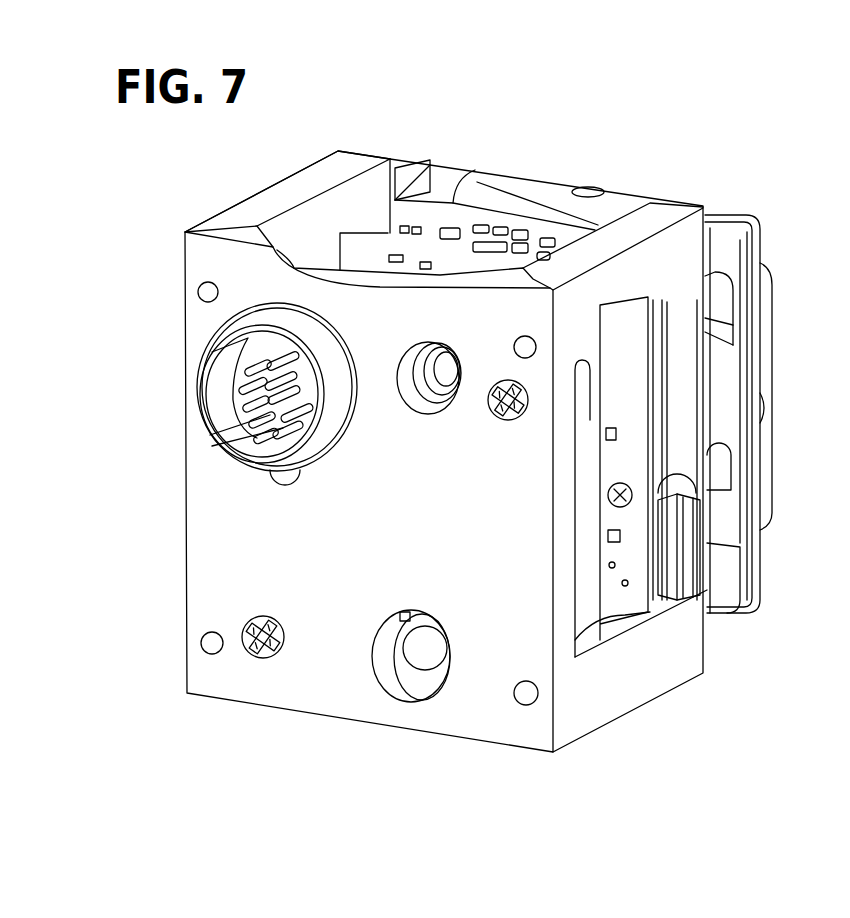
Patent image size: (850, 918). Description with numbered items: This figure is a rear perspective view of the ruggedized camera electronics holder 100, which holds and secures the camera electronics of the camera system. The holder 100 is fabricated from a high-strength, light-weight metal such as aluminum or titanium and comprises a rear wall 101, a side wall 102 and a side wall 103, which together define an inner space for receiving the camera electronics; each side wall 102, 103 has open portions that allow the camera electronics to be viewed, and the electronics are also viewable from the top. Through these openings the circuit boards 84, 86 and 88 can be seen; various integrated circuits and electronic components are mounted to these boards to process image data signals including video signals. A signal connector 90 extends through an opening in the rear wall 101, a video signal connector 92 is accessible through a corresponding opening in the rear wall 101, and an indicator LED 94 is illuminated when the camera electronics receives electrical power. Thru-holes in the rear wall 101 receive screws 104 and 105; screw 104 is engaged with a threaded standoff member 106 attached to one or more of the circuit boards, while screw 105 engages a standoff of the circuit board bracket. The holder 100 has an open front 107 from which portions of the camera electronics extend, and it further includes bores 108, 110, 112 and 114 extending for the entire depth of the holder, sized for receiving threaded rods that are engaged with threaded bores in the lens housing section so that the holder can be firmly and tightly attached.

The circuit board 84 is at (685, 410).
The circuit board 86 is at (653, 580).
The circuit board 88 is at (606, 622).
The signal connector 90 is at (205, 386).
The video signal connector 92 is at (440, 403).
The indicator LED 94 is at (418, 660).
The ruggedized camera electronics holder 100 is at (188, 535).
The rear wall 101 is at (322, 655).
The side wall 102 is at (285, 195).
The side wall 103 is at (680, 262).
The screw 104 is at (512, 418).
The screw 105 is at (258, 620).
The threaded standoff member 106 is at (583, 370).
The open front 107 is at (398, 155).
The bore 108 is at (200, 296).
The bore 110 is at (515, 346).
The bore 112 is at (207, 648).
The bore 114 is at (524, 698).